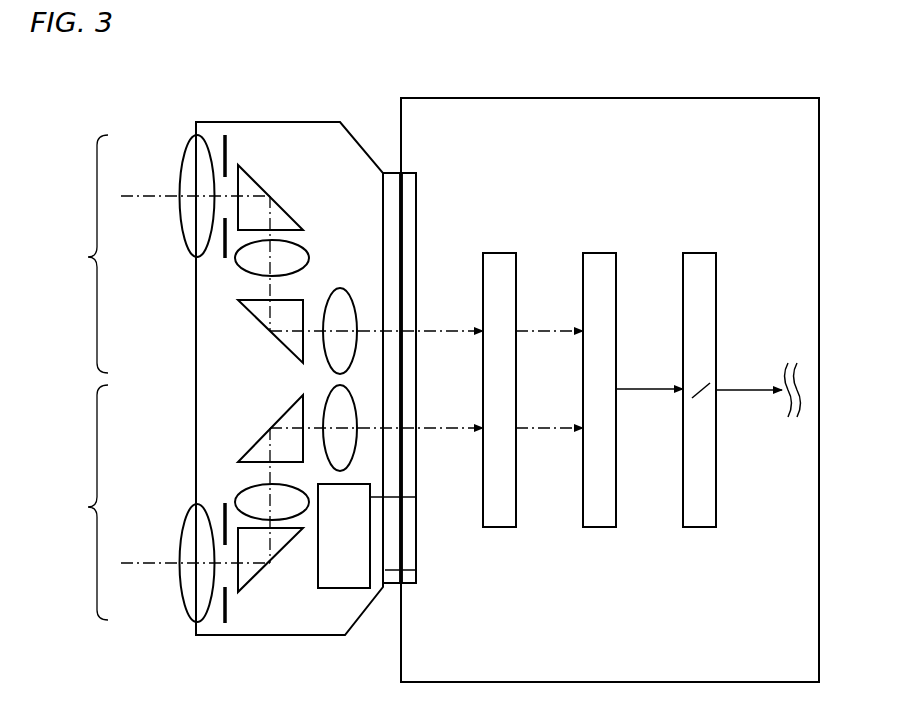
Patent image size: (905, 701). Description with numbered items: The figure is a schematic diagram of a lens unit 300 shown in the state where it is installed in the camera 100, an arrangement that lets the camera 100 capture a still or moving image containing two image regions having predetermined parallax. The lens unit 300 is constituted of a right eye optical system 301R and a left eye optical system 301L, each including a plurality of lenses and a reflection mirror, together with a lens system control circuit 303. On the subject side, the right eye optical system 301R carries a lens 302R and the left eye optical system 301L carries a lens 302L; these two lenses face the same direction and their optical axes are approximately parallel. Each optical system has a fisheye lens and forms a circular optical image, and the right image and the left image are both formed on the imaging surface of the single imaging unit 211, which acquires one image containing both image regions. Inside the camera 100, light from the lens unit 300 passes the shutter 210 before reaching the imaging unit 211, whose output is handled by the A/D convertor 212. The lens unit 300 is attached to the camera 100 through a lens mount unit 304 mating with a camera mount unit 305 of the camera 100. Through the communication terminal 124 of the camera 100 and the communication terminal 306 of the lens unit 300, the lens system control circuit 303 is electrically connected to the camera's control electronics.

The camera 100 is at (657, 98).
The lens unit 300 is at (352, 137).
The right eye optical system 301R is at (259, 254).
The left eye optical system 301L is at (260, 504).
The lens 302R is at (190, 145).
The lens 302L is at (192, 620).
The lens system control circuit 303 is at (345, 570).
The lens mount unit 304 is at (392, 210).
The camera mount unit 305 is at (412, 198).
The communication terminal 124 is at (410, 533).
The communication terminal 306 is at (405, 570).
The shutter 210 is at (500, 253).
The imaging unit 211 is at (600, 253).
The A/D convertor 212 is at (700, 253).